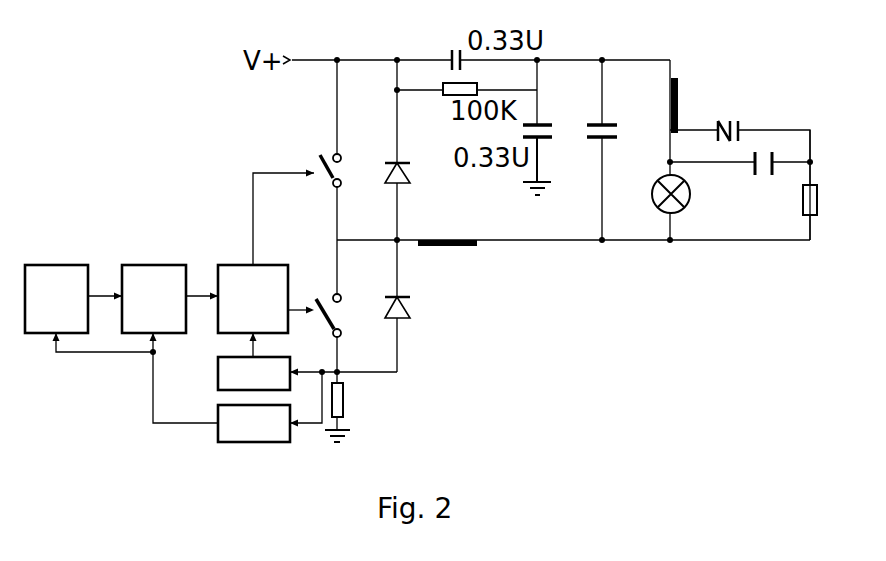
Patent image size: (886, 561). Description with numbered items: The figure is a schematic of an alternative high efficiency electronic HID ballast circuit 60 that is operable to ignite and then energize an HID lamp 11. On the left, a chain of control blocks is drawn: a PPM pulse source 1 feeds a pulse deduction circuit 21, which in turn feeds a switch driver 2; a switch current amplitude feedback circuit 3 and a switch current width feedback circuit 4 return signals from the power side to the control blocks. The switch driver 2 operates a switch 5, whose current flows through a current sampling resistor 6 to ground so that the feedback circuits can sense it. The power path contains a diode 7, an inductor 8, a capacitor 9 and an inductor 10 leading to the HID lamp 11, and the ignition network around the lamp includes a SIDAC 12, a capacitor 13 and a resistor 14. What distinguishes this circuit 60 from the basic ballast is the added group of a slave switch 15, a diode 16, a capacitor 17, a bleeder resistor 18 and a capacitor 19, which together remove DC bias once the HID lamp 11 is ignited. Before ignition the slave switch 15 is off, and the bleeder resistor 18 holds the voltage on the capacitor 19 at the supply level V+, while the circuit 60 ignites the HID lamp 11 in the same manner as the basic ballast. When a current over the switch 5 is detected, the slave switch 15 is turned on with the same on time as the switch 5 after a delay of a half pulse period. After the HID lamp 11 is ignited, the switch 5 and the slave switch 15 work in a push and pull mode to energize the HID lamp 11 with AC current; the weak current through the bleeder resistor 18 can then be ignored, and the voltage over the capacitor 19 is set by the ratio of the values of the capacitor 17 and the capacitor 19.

The PPM pulse source 1 is at (63, 263).
The pulse deduction circuit 21 is at (153, 263).
The switch driver 2 is at (235, 263).
The switch current amplitude feedback circuit 3 is at (215, 370).
The switch current width feedback circuit 4 is at (215, 437).
The switch 5 is at (343, 335).
The current sampling resistor 6 is at (345, 402).
The diode 7 is at (410, 187).
The inductor 8 is at (462, 247).
The capacitor 9 is at (612, 122).
The inductor 10 is at (678, 78).
The HID lamp 11 is at (658, 207).
The SIDAC 12 is at (742, 118).
The capacitor 13 is at (753, 175).
The resistor 14 is at (818, 212).
The slave switch 15 is at (320, 153).
The diode 16 is at (410, 318).
The capacitor 17 is at (447, 53).
The bleeder resistor 18 is at (440, 98).
The capacitor 19 is at (548, 142).
The high efficiency electronic HID ballast circuit 60 is at (523, 343).